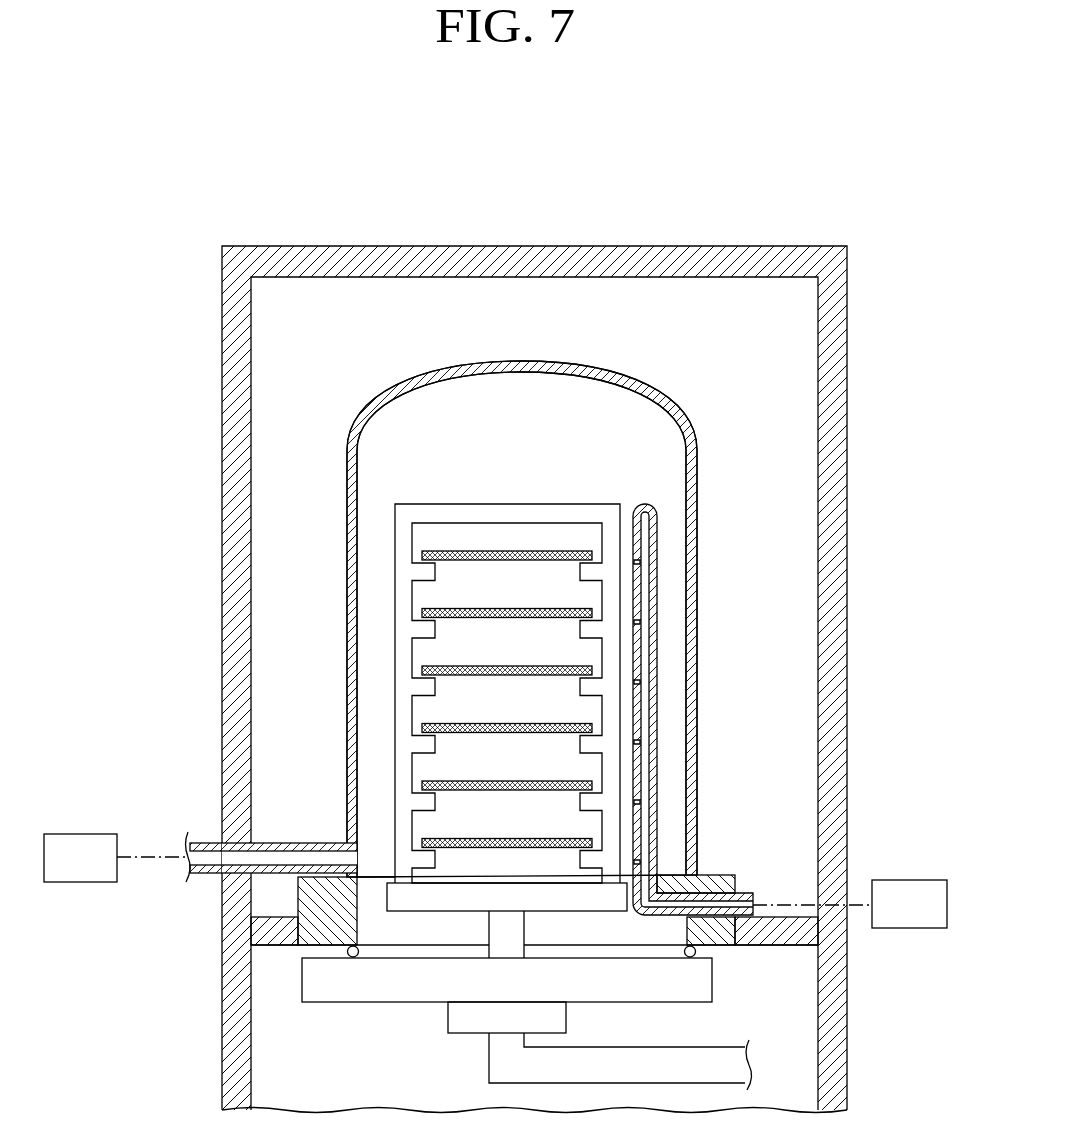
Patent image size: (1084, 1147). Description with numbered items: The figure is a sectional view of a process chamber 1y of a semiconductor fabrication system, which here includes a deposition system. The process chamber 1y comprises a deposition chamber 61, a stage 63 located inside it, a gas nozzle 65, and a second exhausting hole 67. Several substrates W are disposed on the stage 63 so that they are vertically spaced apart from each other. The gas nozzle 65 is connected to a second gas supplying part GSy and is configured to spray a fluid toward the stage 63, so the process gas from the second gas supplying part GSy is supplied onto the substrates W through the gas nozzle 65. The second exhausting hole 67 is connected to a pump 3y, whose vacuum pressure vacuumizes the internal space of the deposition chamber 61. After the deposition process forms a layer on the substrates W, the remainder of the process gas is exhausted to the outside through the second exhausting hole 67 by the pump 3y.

The process chamber 1y is at (552, 679).
The deposition chamber 61 is at (836, 577).
The stage 63 is at (612, 624).
The gas nozzle 65 is at (658, 676).
The substrate W is at (598, 700).
The second exhausting hole 67 is at (208, 875).
The pump 3y is at (88, 833).
The second gas supplying part GSy is at (918, 879).